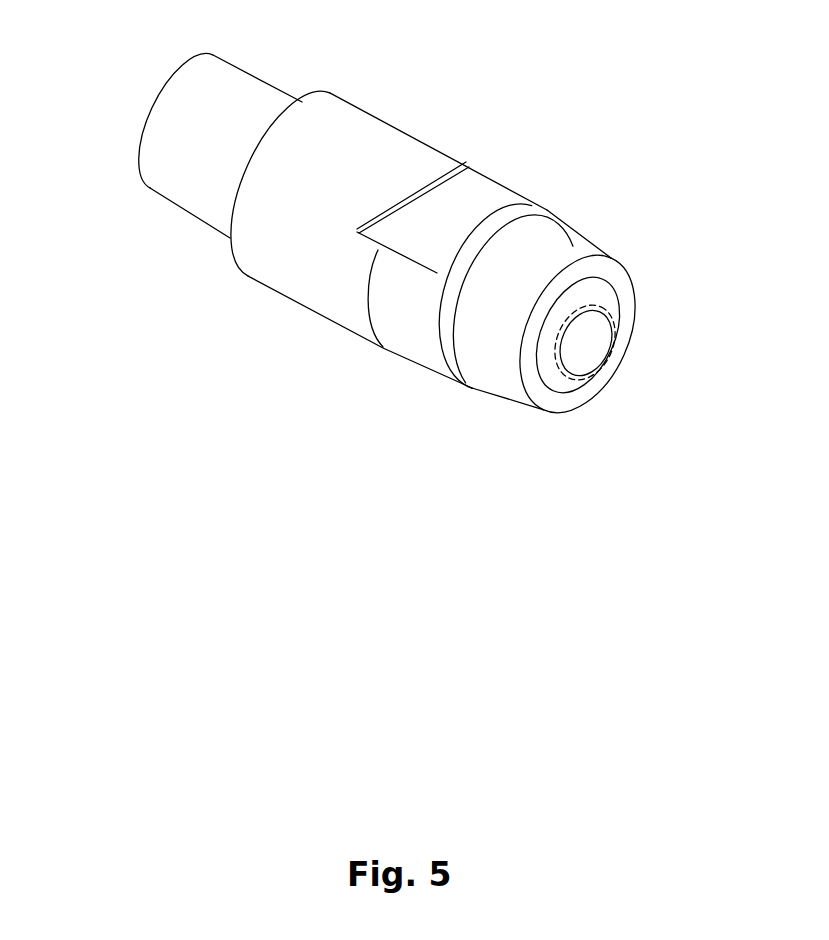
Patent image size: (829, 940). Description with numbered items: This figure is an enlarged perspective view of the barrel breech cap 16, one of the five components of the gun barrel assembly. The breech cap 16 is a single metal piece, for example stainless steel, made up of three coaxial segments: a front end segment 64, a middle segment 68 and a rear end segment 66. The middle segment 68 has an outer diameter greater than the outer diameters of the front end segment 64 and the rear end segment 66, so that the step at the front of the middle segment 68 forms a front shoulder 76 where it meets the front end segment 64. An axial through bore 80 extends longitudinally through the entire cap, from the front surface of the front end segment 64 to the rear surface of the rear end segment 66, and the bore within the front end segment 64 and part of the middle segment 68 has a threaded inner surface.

The barrel breech cap 16 is at (120, 376).
The front end segment 64 is at (226, 58).
The middle segment 68 is at (400, 123).
The front shoulder 76 is at (555, 220).
The rear end segment 66 is at (603, 259).
The axial through bore 80 is at (588, 343).